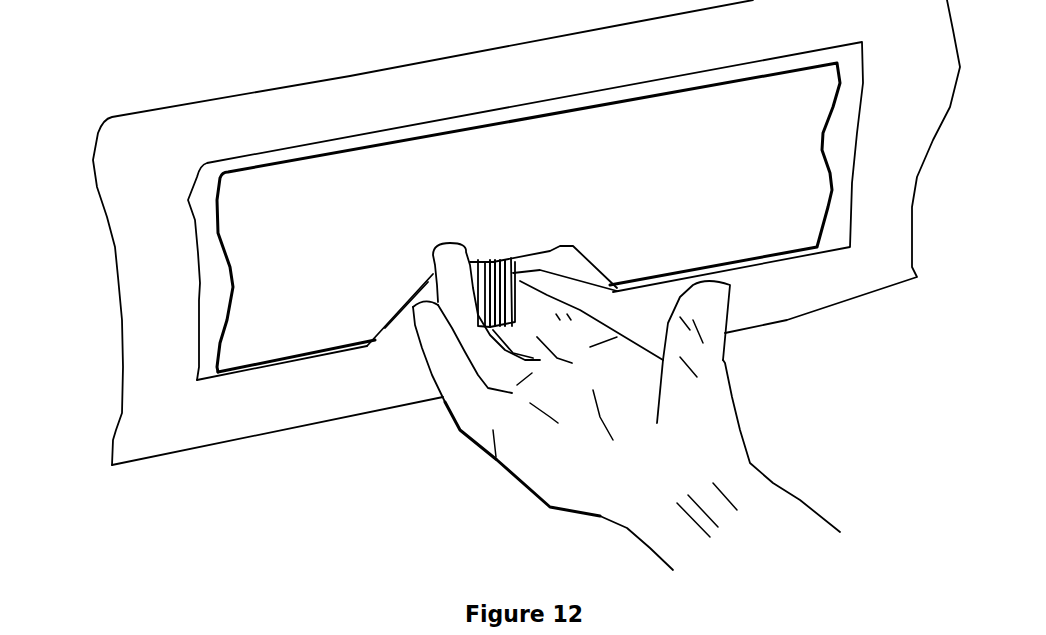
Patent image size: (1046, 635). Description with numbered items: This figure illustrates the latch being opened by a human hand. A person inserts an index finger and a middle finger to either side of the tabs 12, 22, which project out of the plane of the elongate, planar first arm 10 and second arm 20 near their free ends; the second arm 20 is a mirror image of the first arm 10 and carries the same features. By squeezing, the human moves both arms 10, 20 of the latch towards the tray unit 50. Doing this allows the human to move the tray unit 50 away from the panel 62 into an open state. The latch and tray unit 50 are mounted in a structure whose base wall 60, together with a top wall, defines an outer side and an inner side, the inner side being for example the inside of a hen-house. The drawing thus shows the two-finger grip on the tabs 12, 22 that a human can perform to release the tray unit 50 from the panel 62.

The first arm 10 is at (532, 254).
The tab 12 is at (511, 258).
The second arm 20 is at (478, 260).
The tab 22 is at (490, 260).
The tray unit 50 is at (647, 117).
The base wall 60 is at (772, 295).
The panel 62 is at (113, 257).